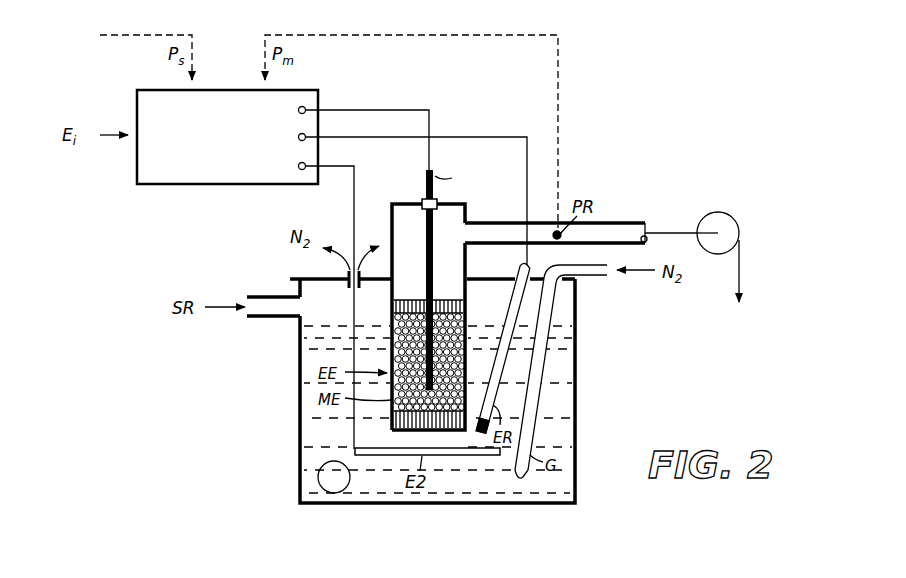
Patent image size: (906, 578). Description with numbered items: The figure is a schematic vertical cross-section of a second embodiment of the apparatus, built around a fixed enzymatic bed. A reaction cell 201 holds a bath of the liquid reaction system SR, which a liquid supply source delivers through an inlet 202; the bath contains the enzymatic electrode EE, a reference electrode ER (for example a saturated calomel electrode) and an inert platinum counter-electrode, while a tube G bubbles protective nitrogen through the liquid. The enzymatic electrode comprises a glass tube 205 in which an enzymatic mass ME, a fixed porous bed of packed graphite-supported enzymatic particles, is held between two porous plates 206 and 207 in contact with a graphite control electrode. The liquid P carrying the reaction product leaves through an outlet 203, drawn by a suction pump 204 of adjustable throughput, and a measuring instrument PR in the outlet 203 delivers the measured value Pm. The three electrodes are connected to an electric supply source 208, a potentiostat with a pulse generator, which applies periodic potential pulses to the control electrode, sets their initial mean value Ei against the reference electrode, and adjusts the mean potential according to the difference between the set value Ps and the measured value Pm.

The reaction cell 201 is at (293, 432).
The inlet 202 is at (266, 318).
The outlet 203 is at (621, 222).
The suction pump 204 is at (722, 219).
The glass tube 205 is at (366, 298).
The porous plate 206 is at (392, 421).
The porous plate 207 is at (448, 298).
The electric supply source 208 is at (195, 185).